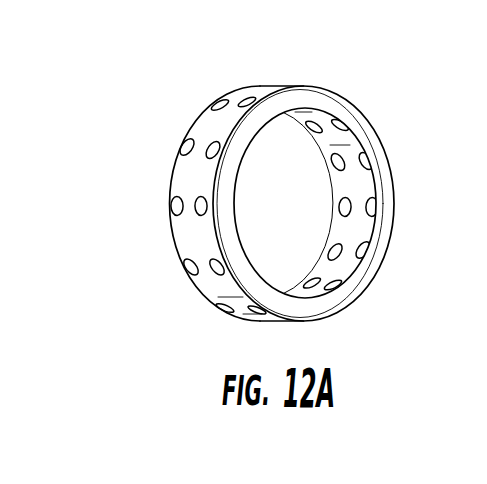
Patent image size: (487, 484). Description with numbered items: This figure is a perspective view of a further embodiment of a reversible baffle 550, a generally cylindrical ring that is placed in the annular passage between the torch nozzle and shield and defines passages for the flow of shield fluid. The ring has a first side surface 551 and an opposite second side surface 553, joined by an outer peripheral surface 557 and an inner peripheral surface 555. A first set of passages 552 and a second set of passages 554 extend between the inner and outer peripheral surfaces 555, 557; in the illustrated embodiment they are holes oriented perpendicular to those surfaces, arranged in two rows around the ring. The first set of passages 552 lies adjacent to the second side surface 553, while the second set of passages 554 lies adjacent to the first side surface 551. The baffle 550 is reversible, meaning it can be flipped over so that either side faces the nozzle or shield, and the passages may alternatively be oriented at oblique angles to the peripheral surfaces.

The reversible baffle 550 is at (273, 164).
The first side surface 551 is at (362, 283).
The first set of passages 552 is at (214, 99).
The second side surface 553 is at (337, 190).
The second set of passages 554 is at (249, 97).
The inner peripheral surface 555 is at (365, 186).
The outer peripheral surface 557 is at (187, 182).